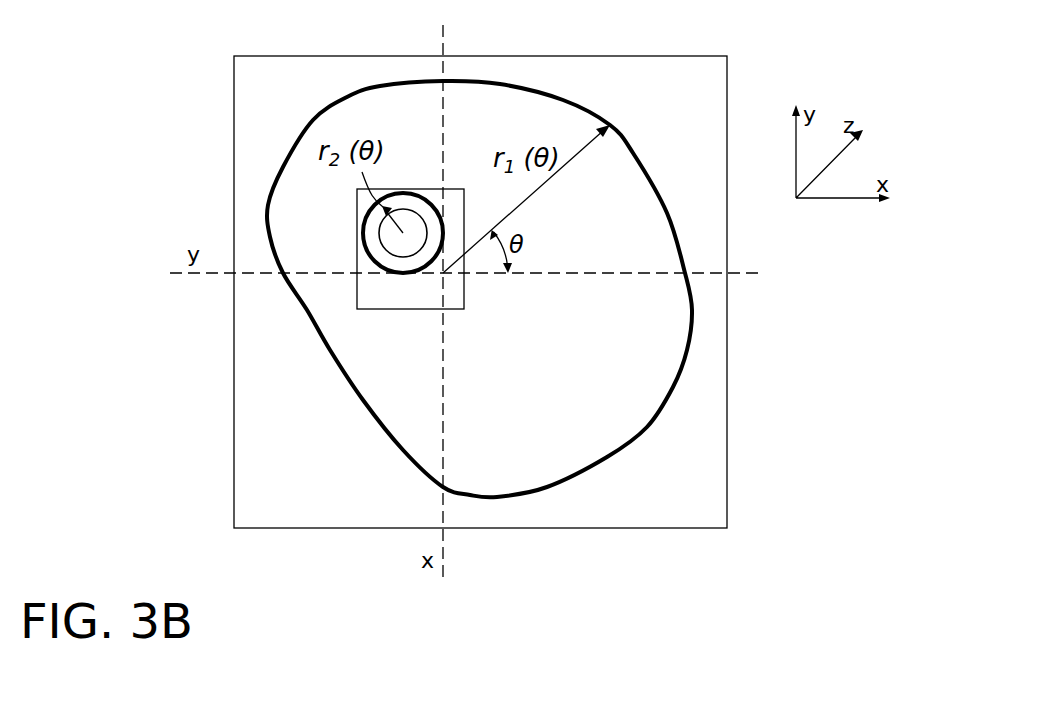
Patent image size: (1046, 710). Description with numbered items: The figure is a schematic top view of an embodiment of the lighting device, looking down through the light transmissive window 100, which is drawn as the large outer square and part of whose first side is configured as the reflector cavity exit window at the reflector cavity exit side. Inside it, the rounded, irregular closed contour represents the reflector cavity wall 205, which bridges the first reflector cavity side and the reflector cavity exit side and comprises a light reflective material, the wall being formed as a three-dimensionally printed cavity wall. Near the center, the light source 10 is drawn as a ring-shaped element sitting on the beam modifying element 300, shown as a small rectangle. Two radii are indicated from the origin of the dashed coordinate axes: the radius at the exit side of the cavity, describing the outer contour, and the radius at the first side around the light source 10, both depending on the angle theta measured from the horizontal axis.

The light source 10 is at (415, 228).
The light transmissive window 100 is at (715, 485).
The reflector cavity wall 205 is at (690, 322).
The beam modifying element 300 is at (450, 301).